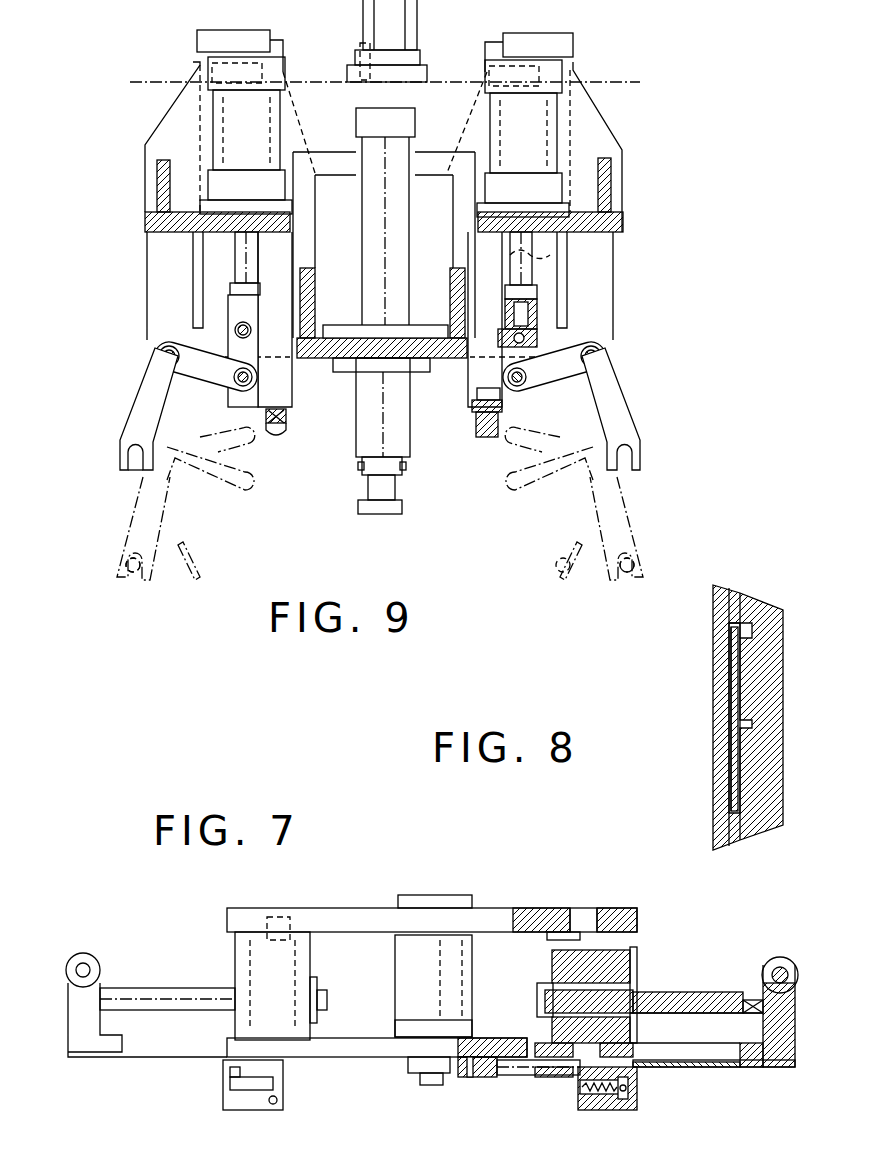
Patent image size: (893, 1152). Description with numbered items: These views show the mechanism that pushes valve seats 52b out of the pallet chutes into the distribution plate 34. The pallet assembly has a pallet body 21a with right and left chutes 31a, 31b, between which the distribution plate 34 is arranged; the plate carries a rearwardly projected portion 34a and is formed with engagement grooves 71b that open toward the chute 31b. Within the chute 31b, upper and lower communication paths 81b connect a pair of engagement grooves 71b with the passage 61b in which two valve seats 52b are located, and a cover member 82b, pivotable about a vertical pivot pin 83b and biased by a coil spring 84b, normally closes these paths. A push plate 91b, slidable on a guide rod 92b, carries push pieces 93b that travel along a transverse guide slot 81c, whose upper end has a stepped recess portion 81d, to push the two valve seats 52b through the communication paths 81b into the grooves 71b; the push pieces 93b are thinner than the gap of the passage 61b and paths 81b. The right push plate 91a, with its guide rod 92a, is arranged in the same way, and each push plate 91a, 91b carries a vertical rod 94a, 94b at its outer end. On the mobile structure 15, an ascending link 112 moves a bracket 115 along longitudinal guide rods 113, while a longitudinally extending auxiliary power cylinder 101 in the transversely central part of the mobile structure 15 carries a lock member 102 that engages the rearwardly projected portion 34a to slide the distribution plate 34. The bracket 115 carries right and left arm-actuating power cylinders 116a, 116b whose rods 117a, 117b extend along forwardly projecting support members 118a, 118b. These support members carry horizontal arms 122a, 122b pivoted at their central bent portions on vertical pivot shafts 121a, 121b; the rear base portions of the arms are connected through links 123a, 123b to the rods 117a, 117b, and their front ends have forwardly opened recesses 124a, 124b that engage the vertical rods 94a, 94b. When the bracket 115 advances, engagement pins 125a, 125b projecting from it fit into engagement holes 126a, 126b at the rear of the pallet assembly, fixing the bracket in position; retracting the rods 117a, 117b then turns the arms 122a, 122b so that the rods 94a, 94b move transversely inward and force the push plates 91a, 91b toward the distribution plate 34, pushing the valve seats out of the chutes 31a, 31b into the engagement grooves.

In FIG. 9, the mobile structure 15 is at (338, 225).
In FIG. 9, the auxiliary power cylinder 101 is at (402, 216).
In FIG. 9, the lock member 102 is at (382, 514).
In FIG. 9, the ascending link 112 is at (405, 28).
In FIG. 9, the longitudinal guide rods 113 is at (238, 38).
In FIG. 9, the bracket 115 is at (602, 142).
In FIG. 9, the right arm-actuating power cylinder 116a is at (215, 148).
In FIG. 9, the left arm-actuating power cylinder 116b is at (545, 135).
In FIG. 9, the rod of right arm-actuating cylinder 117a is at (240, 258).
In FIG. 9, the rod of left arm-actuating cylinder 117b is at (545, 270).
In FIG. 9, the right support member 118a is at (160, 296).
In FIG. 9, the left support member 118b is at (605, 298).
In FIG. 9, the right vertical pivot shaft 121a is at (158, 350).
In FIG. 9, the left vertical pivot shaft 121b is at (604, 356).
In FIG. 9, the right horizontal arm 122a is at (132, 398).
In FIG. 9, the left horizontal arm 122b is at (625, 385).
In FIG. 9, the right link 123a is at (262, 368).
In FIG. 9, the left link 123b is at (500, 362).
In FIG. 9, the right recess 124a is at (128, 458).
In FIG. 9, the left recess 124b is at (628, 460).
In FIG. 9, the right engagement pin 125a is at (288, 420).
In FIG. 9, the left engagement pin 125b is at (478, 434).
In FIG. 9, the right vertical rod 94a is at (135, 573).
In FIG. 7, the right vertical rod 94a is at (90, 970).
In FIG. 9, the left vertical rod 94b is at (615, 578).
In FIG. 7, the left vertical rod 94b is at (782, 957).
In FIG. 8, the communication paths 81b is at (745, 670).
In FIG. 7, the communication paths 81b is at (538, 1078).
In FIG. 8, the guide slot 81c is at (730, 682).
In FIG. 7, the guide slot 81c is at (560, 1078).
In FIG. 8, the stepped recess portion 81d is at (730, 624).
In FIG. 8, the push pieces 93b is at (735, 755).
In FIG. 7, the push pieces 93b is at (680, 1068).
In FIG. 7, the right push plate 91a is at (152, 1060).
In FIG. 7, the left push plate 91b is at (720, 1068).
In FIG. 7, the rod 92a is at (182, 992).
In FIG. 7, the guide rod 92b is at (694, 992).
In FIG. 7, the pallet body 21a is at (322, 958).
In FIG. 7, the right engagement hole 126a is at (296, 915).
In FIG. 7, the left engagement hole 126b is at (578, 915).
In FIG. 7, the rearwardly projected portion 34a is at (458, 982).
In FIG. 7, the distribution plate 34 is at (392, 1073).
In FIG. 7, the right chute 31a is at (326, 1030).
In FIG. 7, the left chute 31b is at (650, 1028).
In FIG. 7, the left engagement grooves 71b is at (545, 1098).
In FIG. 7, the passage 61b is at (636, 1018).
In FIG. 7, the valve seats 52b is at (636, 1050).
In FIG. 7, the cover member 82b is at (600, 1095).
In FIG. 7, the vertical pivot pin 83b is at (622, 1100).
In FIG. 7, the coil spring 84b is at (636, 1105).